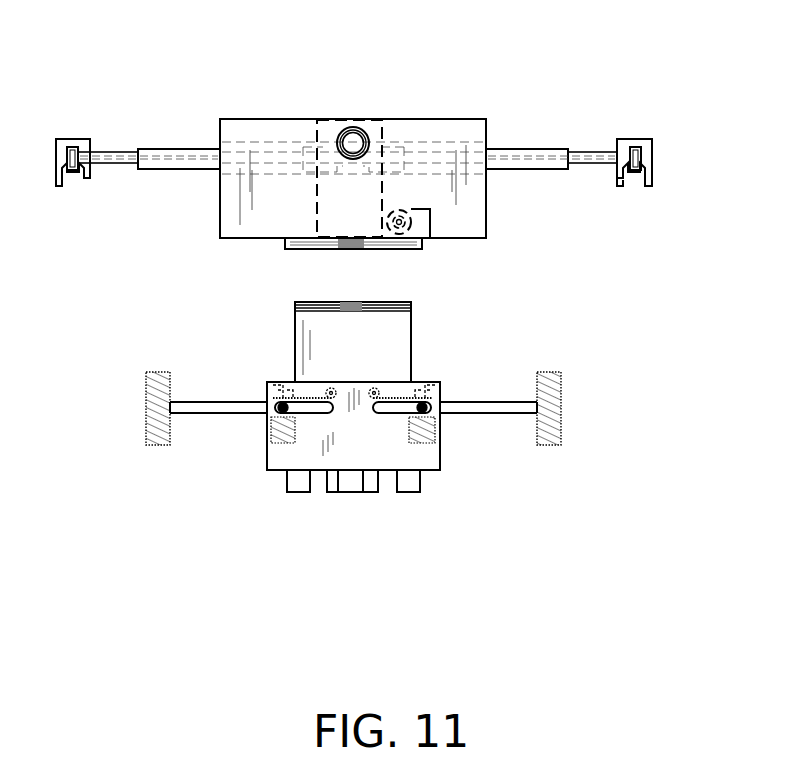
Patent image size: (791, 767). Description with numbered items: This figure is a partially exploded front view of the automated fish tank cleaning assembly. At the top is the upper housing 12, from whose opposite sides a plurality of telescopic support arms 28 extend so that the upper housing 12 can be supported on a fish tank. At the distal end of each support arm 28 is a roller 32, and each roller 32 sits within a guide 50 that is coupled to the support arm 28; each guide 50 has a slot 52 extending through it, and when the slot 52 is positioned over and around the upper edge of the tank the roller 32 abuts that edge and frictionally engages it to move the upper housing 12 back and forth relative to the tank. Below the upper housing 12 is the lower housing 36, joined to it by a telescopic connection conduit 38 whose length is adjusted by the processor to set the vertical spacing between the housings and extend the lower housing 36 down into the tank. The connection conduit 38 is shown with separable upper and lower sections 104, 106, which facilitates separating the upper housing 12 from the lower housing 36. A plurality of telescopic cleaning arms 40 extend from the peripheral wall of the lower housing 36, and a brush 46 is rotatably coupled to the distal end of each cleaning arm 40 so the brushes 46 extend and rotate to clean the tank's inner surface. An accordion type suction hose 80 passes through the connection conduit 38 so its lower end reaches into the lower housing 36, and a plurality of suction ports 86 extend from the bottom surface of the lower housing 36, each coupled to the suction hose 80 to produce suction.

The upper housing 12 is at (452, 127).
The support arm 28 is at (548, 149).
The guide 50 is at (87, 147).
The roller 32 is at (72, 170).
The slot 52 is at (625, 181).
The upper section of connection conduit 104 is at (285, 243).
The lower section of connection conduit 106 is at (300, 325).
The connection conduit 38 is at (402, 326).
The lower housing 36 is at (428, 461).
The cleaning arm 40 is at (495, 408).
The brush 46 is at (152, 430).
The suction port 86 is at (349, 483).
The suction hose 80 is at (367, 483).